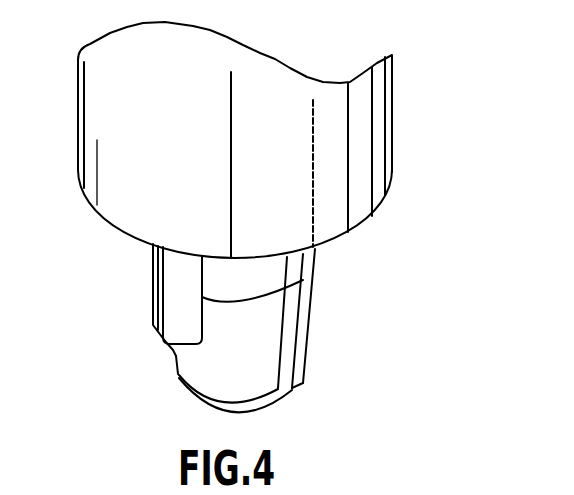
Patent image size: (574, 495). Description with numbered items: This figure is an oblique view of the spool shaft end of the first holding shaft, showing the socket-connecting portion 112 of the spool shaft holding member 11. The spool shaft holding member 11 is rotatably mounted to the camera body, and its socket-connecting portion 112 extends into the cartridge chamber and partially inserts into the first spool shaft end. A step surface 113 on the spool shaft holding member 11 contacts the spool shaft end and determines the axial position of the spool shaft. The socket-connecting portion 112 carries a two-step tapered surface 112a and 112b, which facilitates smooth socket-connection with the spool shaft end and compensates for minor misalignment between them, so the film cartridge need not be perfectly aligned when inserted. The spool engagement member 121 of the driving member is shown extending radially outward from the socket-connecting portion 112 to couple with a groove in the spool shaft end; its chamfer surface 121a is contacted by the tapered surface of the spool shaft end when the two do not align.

The spool shaft holding member 11 is at (377, 97).
The step surface 113 is at (375, 217).
The socket-connecting portion 112 is at (313, 267).
The tapered surface 112a is at (283, 397).
The tapered surface 112b is at (270, 337).
The spool engagement member 121 is at (157, 293).
The chamfer surface 121a is at (162, 343).